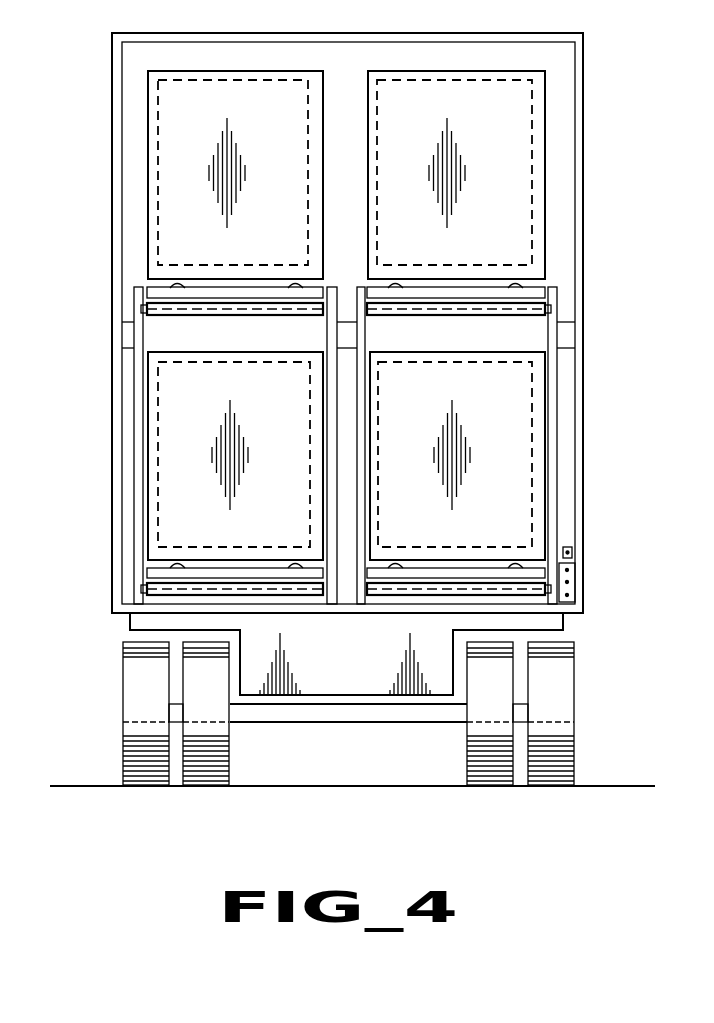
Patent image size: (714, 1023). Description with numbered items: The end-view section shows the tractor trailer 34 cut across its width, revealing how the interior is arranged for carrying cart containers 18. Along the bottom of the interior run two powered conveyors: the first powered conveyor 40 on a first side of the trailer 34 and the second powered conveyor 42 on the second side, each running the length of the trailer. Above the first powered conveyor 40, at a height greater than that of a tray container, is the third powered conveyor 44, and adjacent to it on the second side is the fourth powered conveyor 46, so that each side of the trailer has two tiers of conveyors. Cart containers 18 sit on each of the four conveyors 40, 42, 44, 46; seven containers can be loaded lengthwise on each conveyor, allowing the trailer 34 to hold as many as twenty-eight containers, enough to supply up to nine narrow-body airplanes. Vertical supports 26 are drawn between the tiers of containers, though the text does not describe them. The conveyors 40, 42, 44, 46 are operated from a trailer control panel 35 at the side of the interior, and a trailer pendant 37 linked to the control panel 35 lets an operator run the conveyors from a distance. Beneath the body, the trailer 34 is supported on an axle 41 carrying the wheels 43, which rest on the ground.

The housing frame 34 is at (112, 56).
The support posts 26 is at (388, 71).
The cargo panels 18 is at (148, 238).
The upper left roller rail 44 is at (165, 313).
The upper right roller rail 46 is at (541, 312).
The lower left roller rail 40 is at (149, 576).
The lower right roller rail 42 is at (414, 597).
The switch 37 is at (572, 553).
The control panel 35 is at (575, 580).
The chassis 41 is at (310, 720).
The wheels 43 is at (205, 787).